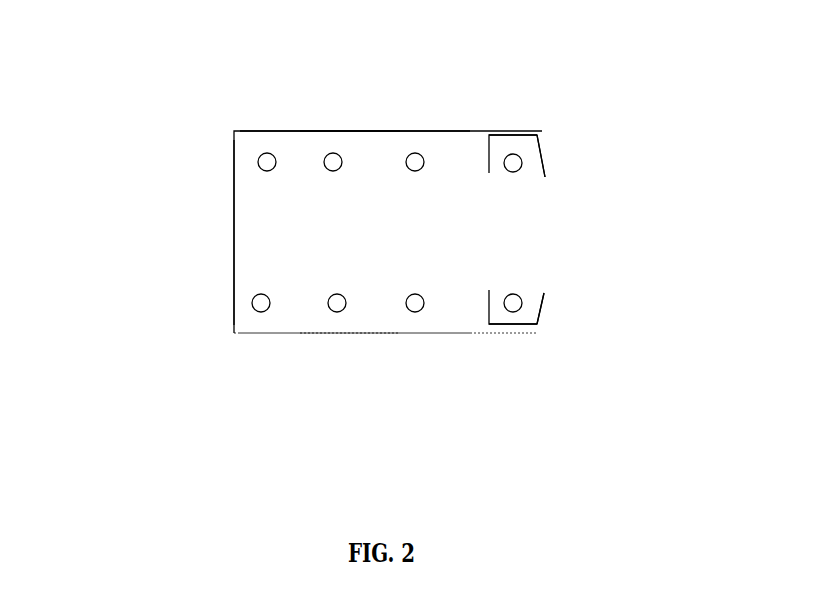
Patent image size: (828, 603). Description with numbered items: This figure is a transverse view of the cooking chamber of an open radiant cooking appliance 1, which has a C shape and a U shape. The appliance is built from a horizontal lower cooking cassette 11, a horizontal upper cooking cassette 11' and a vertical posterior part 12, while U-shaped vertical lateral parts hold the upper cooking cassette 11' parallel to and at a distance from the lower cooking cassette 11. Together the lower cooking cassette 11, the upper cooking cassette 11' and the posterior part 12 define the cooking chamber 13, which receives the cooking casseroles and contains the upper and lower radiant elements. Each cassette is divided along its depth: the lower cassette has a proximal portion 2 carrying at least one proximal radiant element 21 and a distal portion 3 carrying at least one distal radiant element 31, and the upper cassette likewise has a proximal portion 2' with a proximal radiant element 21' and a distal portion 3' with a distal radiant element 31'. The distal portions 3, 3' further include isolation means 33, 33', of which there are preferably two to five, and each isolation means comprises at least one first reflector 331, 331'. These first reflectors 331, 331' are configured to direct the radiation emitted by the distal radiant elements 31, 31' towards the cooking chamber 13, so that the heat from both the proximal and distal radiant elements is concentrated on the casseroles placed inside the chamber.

The open radiant cooking appliance 1 is at (205, 102).
The lower cooking cassette 11 is at (355, 396).
The upper cooking cassette 11' is at (355, 75).
The posterior part 12 is at (233, 216).
The cooking chamber 13 is at (260, 265).
The proximal portion 2 is at (350, 406).
The proximal portion 2' is at (350, 91).
The proximal radiant element 21 is at (292, 369).
The proximal radiant element 21' is at (280, 160).
The distal portion 3 is at (482, 359).
The distal portion 3' is at (470, 106).
The distal radiant element 31 is at (513, 361).
The distal radiant element 31' is at (524, 104).
The isolation means 33 is at (591, 328).
The isolation means 33' is at (598, 139).
The first reflector 331 is at (484, 392).
The first reflector 331' is at (487, 83).